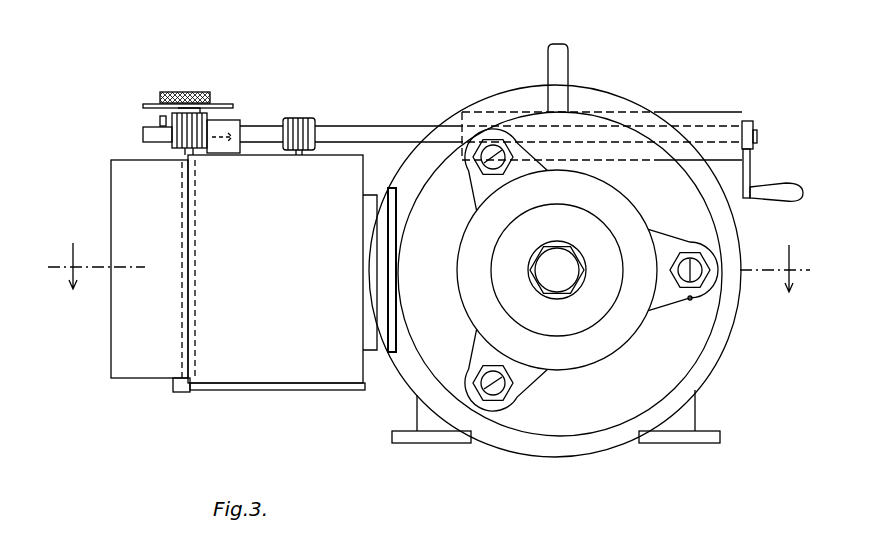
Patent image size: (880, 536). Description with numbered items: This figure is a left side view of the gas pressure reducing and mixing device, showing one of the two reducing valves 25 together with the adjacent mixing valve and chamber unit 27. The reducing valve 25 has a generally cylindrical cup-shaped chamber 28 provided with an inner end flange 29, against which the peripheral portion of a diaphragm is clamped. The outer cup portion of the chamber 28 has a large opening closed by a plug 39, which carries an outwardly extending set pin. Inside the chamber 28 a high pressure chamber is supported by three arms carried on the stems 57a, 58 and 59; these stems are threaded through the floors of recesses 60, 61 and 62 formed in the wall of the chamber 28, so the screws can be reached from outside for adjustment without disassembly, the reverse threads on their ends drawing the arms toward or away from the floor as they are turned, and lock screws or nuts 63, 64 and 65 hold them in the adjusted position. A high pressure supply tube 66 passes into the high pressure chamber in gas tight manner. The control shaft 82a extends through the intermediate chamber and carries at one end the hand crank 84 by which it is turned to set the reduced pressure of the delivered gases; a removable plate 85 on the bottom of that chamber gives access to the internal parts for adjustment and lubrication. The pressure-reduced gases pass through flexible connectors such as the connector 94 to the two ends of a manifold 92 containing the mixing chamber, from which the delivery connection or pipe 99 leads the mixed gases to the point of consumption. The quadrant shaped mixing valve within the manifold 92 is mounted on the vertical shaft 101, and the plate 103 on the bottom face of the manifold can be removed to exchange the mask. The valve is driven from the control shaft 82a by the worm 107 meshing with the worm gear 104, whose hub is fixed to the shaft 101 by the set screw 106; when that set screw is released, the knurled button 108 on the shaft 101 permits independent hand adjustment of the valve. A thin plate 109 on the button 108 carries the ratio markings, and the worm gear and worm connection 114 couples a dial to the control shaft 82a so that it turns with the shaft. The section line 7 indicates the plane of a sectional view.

The section line 7- 7 is at (429, 270).
The reducing valve 25 is at (568, 426).
The mixing valve and chamber unit 27 is at (213, 407).
The cylindrical chamber 28 is at (535, 270).
The inner end flange 29 is at (700, 357).
The plug 39 is at (578, 237).
The stem 57a is at (485, 169).
The stem 58 is at (707, 265).
The stem 59 is at (506, 384).
The recess 60 is at (518, 161).
The recess 61 is at (684, 301).
The recess 62 is at (468, 372).
The lock screw or nut 63 is at (493, 186).
The lock screw or nut 64 is at (487, 405).
The lock screw or nut 65 is at (701, 287).
The high pressure supply tube 66 is at (563, 55).
The control shaft 82a is at (373, 133).
The hand crank 84 is at (779, 186).
The removable plate 85 is at (670, 442).
The manifold 92 is at (275, 269).
The flexible connector 94 is at (383, 193).
The delivery connection or pipe 99 is at (130, 363).
The vertical shaft 101 is at (183, 391).
The plate 103 is at (292, 392).
The worm gear 104 is at (143, 134).
The set screw 106 is at (160, 120).
The worm 107 is at (172, 150).
The knurled button 108 is at (202, 92).
The thin plate 109 is at (232, 105).
The worm gear and worm connection 114 is at (312, 118).